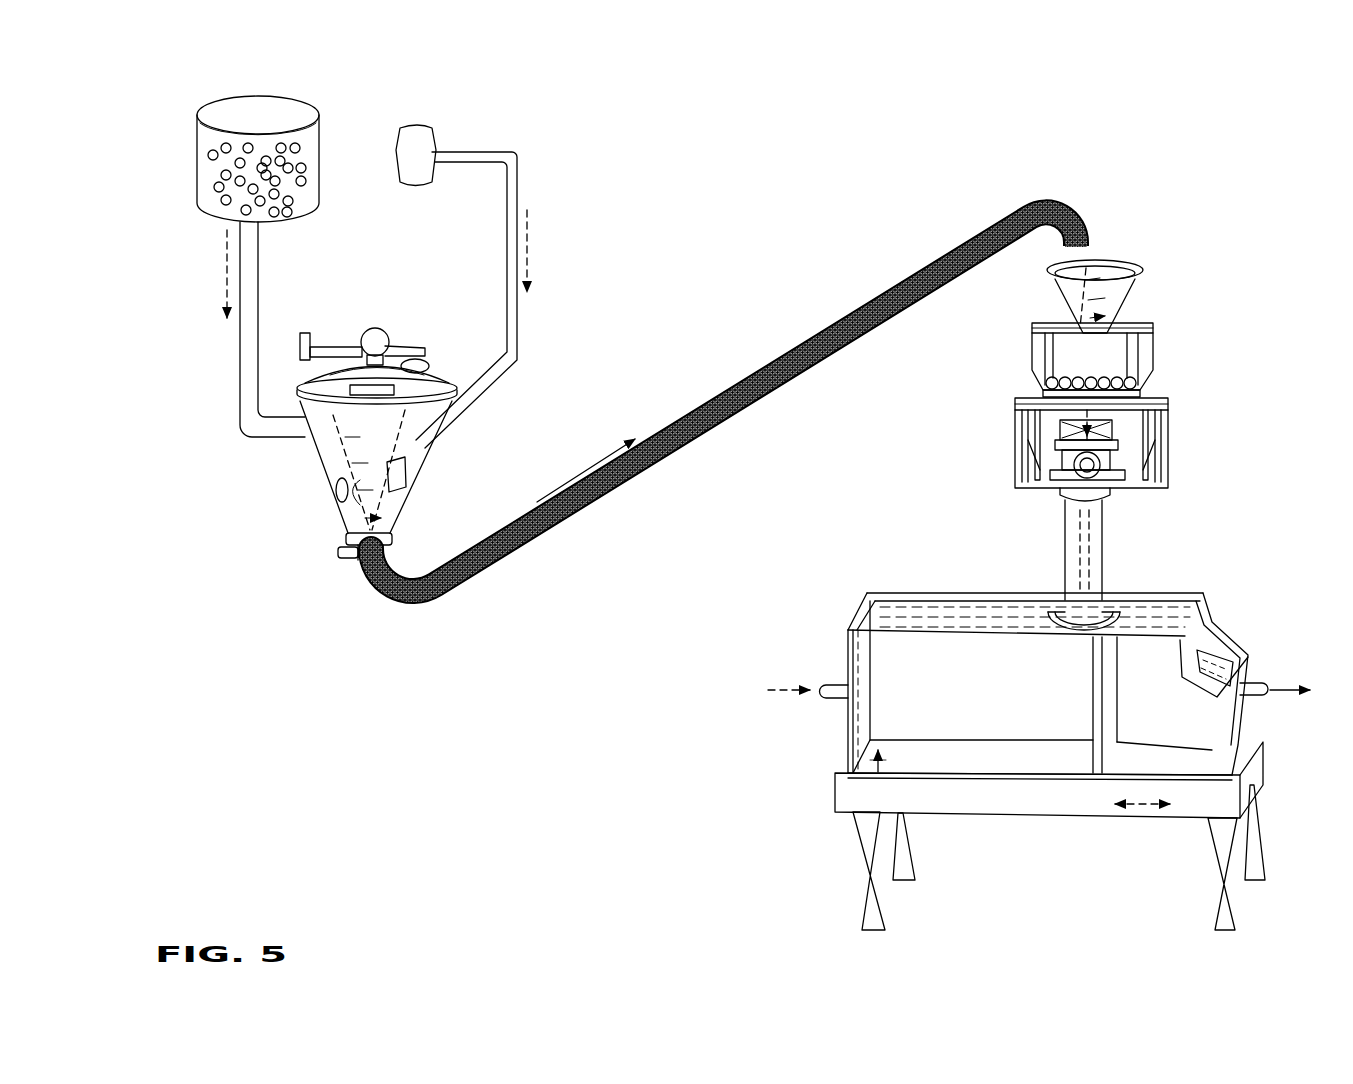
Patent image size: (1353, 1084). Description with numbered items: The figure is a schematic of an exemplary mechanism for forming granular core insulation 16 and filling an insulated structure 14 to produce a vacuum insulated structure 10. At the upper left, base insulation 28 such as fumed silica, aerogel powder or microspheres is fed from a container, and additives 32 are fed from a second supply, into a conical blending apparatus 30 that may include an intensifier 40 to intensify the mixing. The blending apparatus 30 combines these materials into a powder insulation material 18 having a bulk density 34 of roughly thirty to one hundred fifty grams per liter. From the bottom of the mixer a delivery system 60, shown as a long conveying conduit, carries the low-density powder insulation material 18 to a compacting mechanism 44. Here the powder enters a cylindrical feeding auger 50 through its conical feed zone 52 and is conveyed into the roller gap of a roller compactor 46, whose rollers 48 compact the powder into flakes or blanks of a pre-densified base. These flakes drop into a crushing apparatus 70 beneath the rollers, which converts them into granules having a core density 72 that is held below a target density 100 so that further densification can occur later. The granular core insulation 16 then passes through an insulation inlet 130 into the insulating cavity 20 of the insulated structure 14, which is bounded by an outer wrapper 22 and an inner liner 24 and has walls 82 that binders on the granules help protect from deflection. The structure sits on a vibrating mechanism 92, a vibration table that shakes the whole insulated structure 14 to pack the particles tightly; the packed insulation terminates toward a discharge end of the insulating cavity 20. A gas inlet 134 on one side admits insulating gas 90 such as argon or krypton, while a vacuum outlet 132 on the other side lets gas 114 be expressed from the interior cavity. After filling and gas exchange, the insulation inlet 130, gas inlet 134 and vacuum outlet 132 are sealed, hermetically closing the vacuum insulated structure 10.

The vacuum insulated structure 10 is at (797, 749).
The insulated structure 14 is at (1010, 710).
The granular core insulation 16 is at (1092, 544).
The powder insulation material 18 is at (254, 105).
The insulating cavity 20 is at (1207, 597).
The outer wrapper 22 is at (1018, 758).
The inner liner 24 is at (1217, 640).
The base insulation 28 is at (188, 153).
The blending apparatus 30 is at (308, 481).
The additives 32 is at (527, 256).
The bulk density 34 is at (363, 591).
The intensifier 40 is at (410, 466).
The compacting mechanism 44 is at (1139, 317).
The roller compactor 46 is at (1163, 364).
The rollers 48 is at (1068, 378).
The cylindrical feeding auger 50 is at (1117, 258).
The conical feed zone 52 is at (1053, 294).
The delivery system 60 is at (673, 418).
The crushing apparatus 70 is at (1182, 436).
The core density 72 is at (1058, 533).
The walls 82 is at (887, 663).
The insulating gas 90 is at (791, 688).
The vibrating mechanism 92 is at (1077, 805).
The target density 100 is at (876, 782).
The gas 114 is at (1282, 688).
The insulation inlet 130 is at (1135, 614).
The vacuum outlet 132 is at (1254, 698).
The gas inlet 134 is at (836, 700).